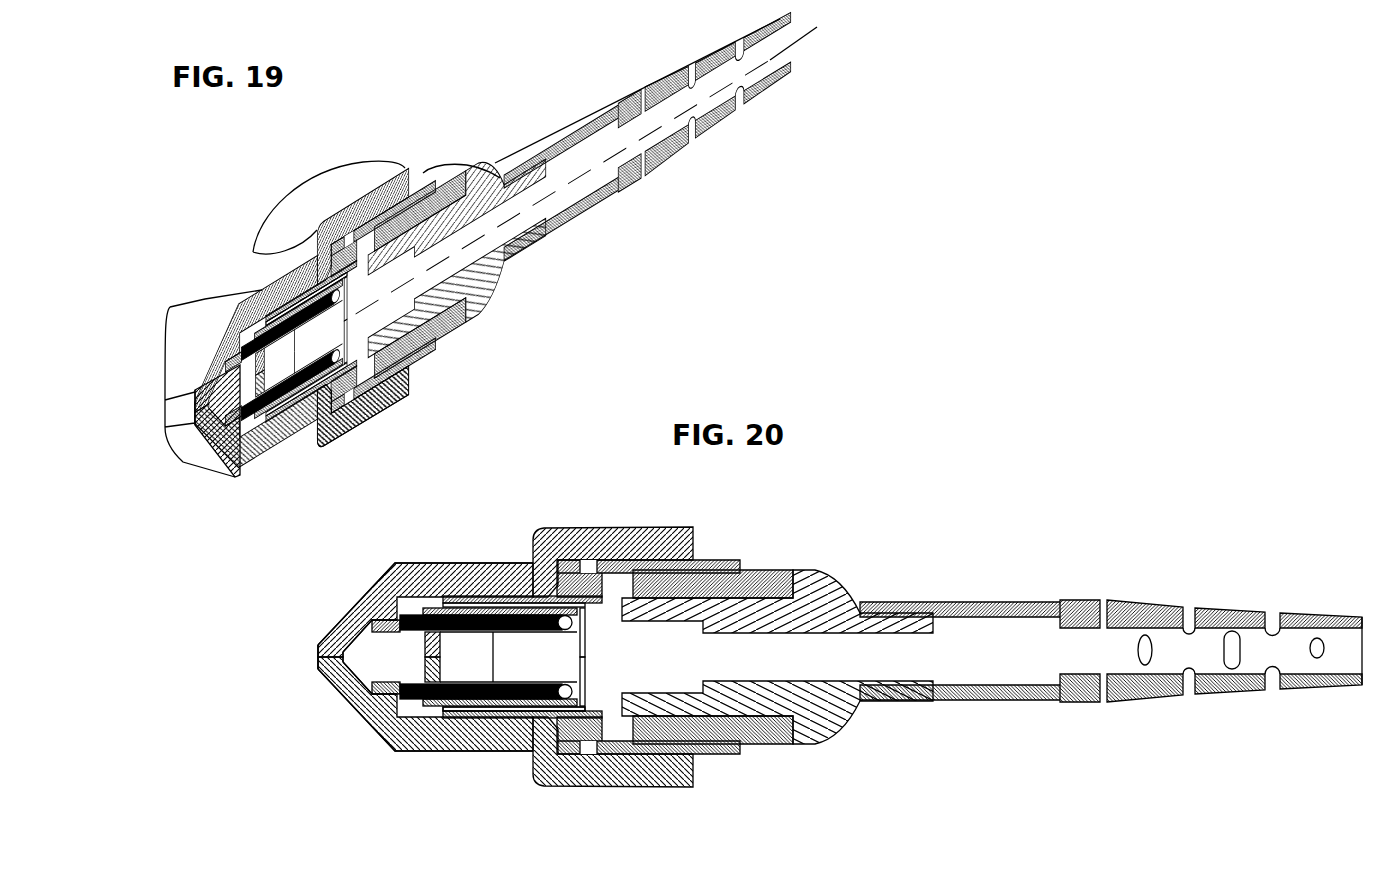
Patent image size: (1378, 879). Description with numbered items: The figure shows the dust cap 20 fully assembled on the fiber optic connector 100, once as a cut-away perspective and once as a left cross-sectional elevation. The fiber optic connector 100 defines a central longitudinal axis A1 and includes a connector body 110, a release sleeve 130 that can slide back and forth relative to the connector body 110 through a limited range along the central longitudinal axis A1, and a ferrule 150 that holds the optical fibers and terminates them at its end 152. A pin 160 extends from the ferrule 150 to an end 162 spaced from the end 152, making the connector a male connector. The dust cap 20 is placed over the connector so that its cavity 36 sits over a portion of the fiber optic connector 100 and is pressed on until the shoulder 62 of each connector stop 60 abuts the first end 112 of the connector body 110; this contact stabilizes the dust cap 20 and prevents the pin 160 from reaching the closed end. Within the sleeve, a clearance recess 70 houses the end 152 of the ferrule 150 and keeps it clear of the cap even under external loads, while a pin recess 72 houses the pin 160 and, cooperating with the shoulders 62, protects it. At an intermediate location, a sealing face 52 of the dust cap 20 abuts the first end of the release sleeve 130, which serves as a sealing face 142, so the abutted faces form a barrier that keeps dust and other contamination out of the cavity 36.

In FIG. 20, the dust cap 20 is at (323, 633).
In FIG. 19, the dust cap 20 is at (367, 427).
In FIG. 20, the cavity 36 is at (413, 663).
In FIG. 20, the sealing face 52 is at (537, 773).
In FIG. 20, the connector stop 60 is at (383, 730).
In FIG. 19, the connector stop 60 is at (233, 443).
In FIG. 20, the shoulder 62 is at (460, 583).
In FIG. 20, the clearance recess 70 is at (400, 713).
In FIG. 20, the pin recess 72 is at (367, 672).
In FIG. 19, the pin recess 72 is at (240, 470).
In FIG. 20, the fiber optic connector 100 is at (818, 572).
In FIG. 19, the fiber optic connector 100 is at (437, 357).
In FIG. 20, the connector body 110 is at (487, 598).
In FIG. 19, the connector body 110 is at (447, 193).
In FIG. 20, the first end 112 is at (440, 718).
In FIG. 19, the first end 112 is at (253, 290).
In FIG. 20, the release sleeve 130 is at (707, 558).
In FIG. 19, the release sleeve 130 is at (417, 180).
In FIG. 20, the sealing face 142 is at (553, 570).
In FIG. 19, the sealing face 142 is at (323, 240).
In FIG. 19, the ferrule 150 is at (277, 413).
In FIG. 19, the end 152 is at (262, 380).
In FIG. 20, the pin 160 is at (412, 617).
In FIG. 19, the pin 160 is at (240, 353).
In FIG. 20, the end 162 is at (395, 620).
In FIG. 19, the central longitudinal axis A1 is at (800, 40).